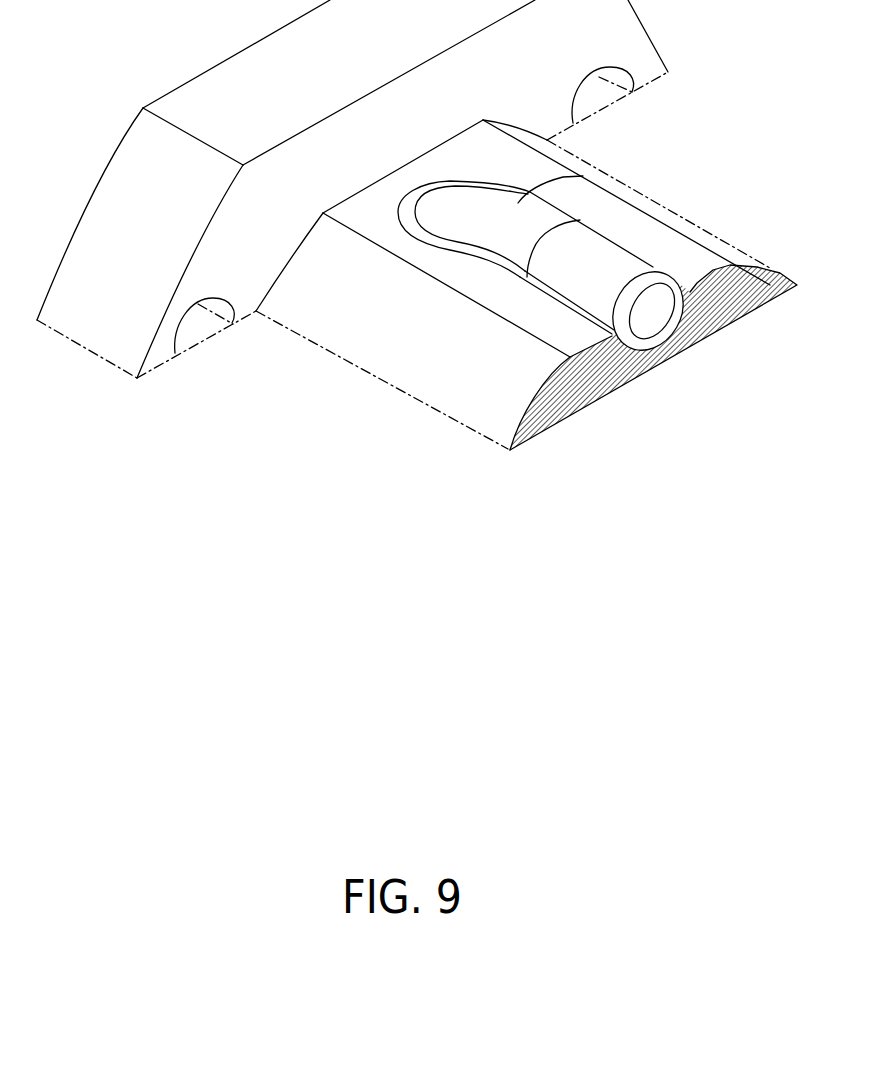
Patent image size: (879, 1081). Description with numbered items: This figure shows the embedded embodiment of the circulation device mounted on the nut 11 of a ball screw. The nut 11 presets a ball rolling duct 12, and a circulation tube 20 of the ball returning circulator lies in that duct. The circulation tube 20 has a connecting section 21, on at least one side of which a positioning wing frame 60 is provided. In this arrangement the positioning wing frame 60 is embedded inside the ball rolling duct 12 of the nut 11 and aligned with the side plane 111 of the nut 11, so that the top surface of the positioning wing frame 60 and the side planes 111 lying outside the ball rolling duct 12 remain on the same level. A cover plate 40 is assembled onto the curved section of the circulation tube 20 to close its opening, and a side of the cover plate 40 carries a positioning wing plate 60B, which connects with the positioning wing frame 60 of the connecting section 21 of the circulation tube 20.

The nut 11 is at (407, 306).
The side plane 111 is at (377, 222).
The ball rolling duct 12 is at (662, 323).
The circulation tube 20 is at (627, 232).
The connecting section 21 is at (657, 270).
The cover plate 40 is at (583, 176).
The positioning wing frame 60 is at (567, 300).
The positioning wing plate 60B is at (407, 213).